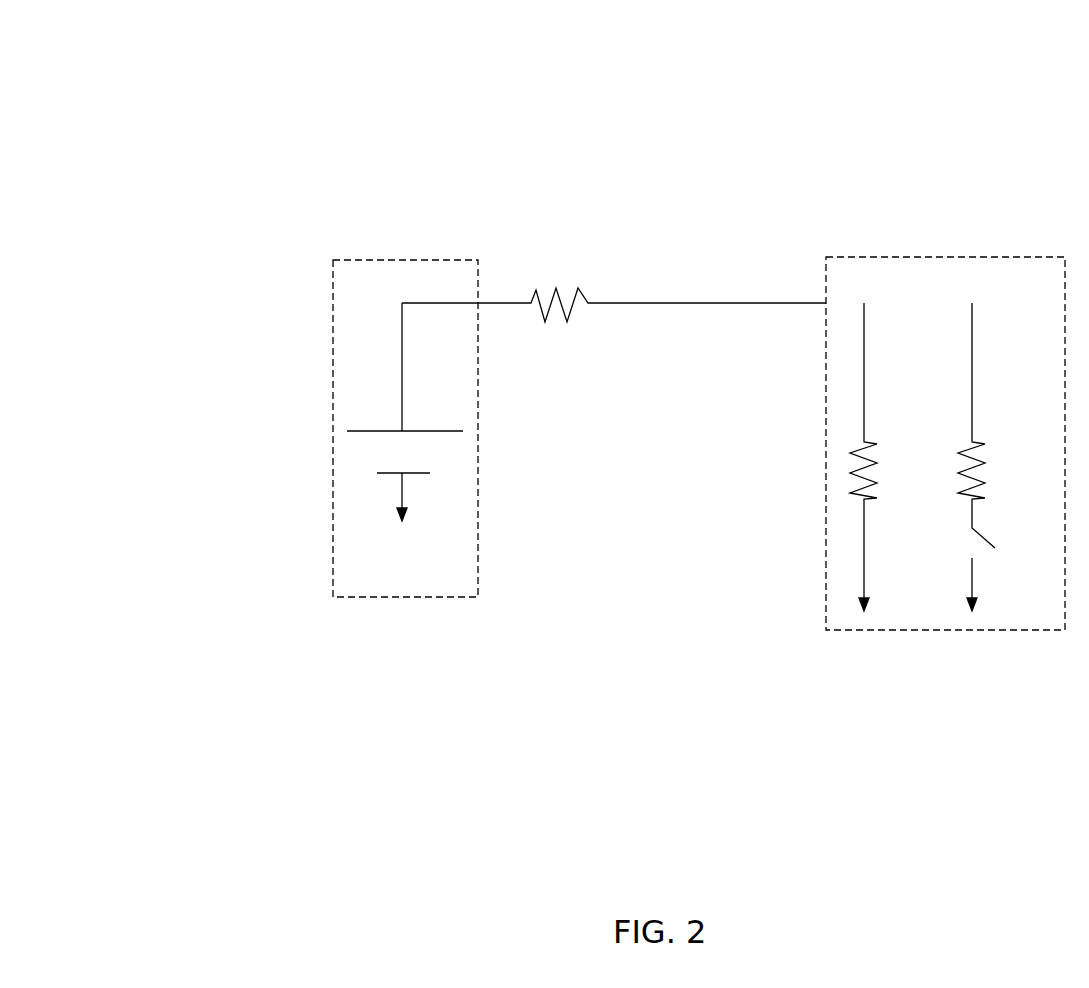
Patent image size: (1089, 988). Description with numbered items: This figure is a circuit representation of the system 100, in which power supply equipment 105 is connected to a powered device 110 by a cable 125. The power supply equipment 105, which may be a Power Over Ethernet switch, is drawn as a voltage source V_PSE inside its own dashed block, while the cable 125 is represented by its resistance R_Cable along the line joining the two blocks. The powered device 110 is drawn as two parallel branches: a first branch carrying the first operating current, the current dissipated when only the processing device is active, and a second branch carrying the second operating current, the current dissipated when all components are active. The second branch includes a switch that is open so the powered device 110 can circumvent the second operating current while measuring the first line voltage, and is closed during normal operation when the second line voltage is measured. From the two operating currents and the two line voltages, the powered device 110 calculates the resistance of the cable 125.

The system 100 is at (131, 56).
The power supply equipment 105 is at (405, 428).
The powered device 110 is at (945, 443).
The cable 125 is at (614, 302).